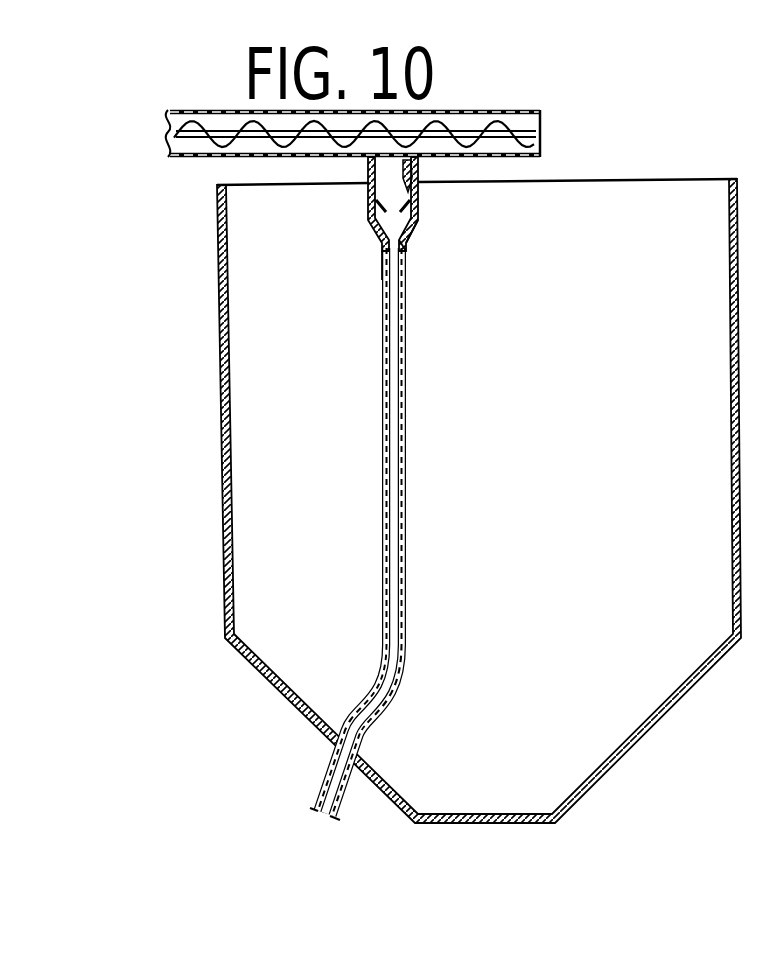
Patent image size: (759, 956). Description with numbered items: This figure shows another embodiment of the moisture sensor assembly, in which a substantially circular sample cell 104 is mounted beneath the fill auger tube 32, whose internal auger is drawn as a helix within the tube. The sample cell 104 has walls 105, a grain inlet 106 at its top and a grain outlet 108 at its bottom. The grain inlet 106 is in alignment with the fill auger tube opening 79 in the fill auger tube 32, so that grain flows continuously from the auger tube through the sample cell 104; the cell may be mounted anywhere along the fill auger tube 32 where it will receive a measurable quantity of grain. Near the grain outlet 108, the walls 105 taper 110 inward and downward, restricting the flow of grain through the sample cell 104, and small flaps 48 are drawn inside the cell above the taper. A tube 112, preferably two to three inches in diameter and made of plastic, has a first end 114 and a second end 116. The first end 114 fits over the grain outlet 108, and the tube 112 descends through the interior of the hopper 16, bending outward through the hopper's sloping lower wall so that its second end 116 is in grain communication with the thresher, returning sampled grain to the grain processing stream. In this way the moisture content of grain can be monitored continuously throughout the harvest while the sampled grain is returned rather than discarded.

The hopper 16 is at (275, 375).
The fill auger tube 32 is at (508, 112).
The valve flaps 48 is at (413, 194).
The fill auger tube opening 79 is at (418, 178).
The sample cell 104 is at (318, 256).
The walls 105 is at (368, 207).
The grain inlet 106 is at (417, 113).
The grain outlet 108 is at (412, 238).
The taper 110 is at (407, 235).
The tube 112 is at (406, 408).
The first end 114 is at (383, 265).
The second end 116 is at (348, 780).